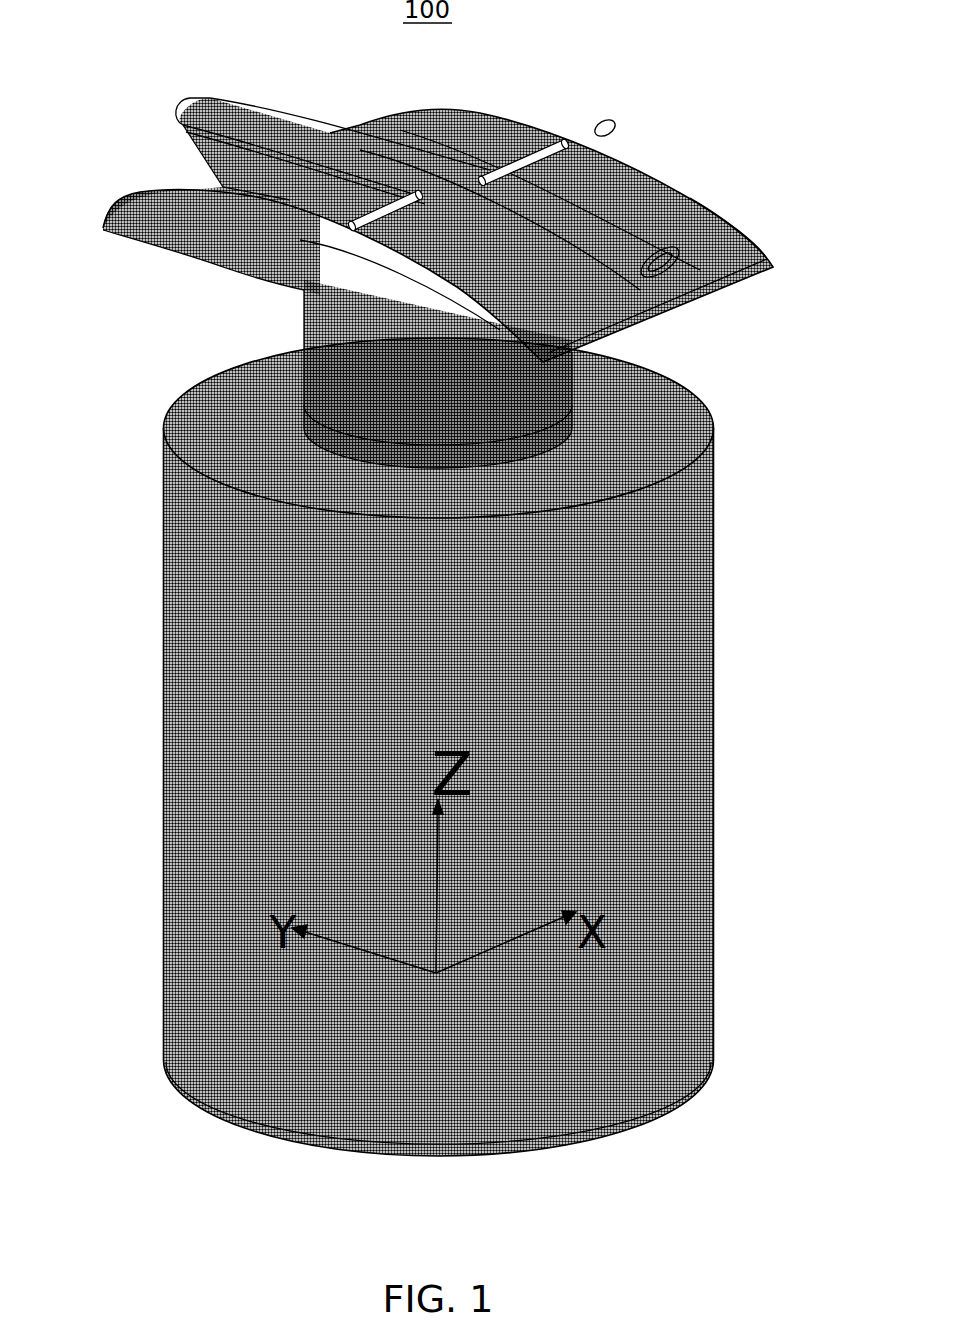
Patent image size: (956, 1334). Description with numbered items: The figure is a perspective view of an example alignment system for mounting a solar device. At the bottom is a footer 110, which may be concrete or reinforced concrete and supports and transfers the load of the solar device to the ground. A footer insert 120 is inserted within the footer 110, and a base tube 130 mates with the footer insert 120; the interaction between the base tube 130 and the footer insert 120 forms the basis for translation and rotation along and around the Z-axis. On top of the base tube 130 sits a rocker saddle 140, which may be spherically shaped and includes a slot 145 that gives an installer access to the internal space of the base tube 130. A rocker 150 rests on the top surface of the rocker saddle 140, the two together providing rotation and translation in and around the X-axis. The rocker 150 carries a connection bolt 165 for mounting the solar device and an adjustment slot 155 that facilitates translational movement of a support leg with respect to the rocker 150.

The footer 110 is at (717, 673).
The footer insert 120 is at (550, 440).
The base tube 130 is at (330, 375).
The rocker saddle 140 is at (438, 230).
The slot 145 is at (400, 228).
The rocker 150 is at (185, 110).
The adjustment slot 155 is at (540, 143).
The connection bolt 165 is at (438, 140).